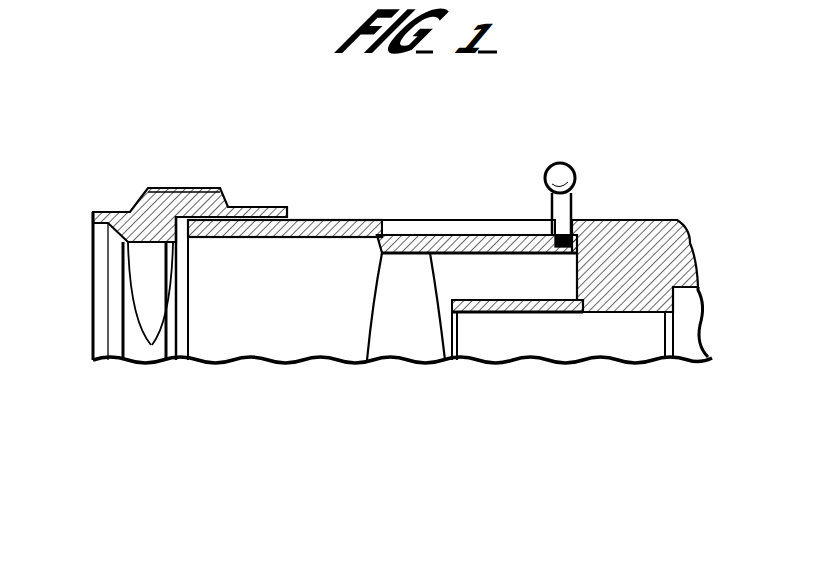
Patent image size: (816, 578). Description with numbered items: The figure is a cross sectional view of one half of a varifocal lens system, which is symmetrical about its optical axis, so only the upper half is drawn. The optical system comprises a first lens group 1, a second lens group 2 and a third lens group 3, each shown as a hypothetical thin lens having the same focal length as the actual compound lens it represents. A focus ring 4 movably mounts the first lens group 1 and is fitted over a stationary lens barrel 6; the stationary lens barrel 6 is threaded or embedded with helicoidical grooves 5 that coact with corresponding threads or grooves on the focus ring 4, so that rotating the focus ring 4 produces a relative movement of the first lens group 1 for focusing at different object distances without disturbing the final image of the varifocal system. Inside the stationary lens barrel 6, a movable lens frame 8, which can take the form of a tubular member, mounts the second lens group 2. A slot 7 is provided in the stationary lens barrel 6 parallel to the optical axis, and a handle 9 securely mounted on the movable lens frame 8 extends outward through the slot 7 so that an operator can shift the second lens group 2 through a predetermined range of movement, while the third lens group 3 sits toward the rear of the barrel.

The first lens group 1 is at (147, 343).
The second lens group 2 is at (420, 330).
The third lens group 3 is at (575, 340).
The focus ring 4 is at (172, 188).
The helicoidical grooves 5 is at (213, 190).
The stationary lens barrel 6 is at (335, 220).
The slot 7 is at (460, 220).
The movable lens frame 8 is at (502, 250).
The handle 9 is at (565, 207).